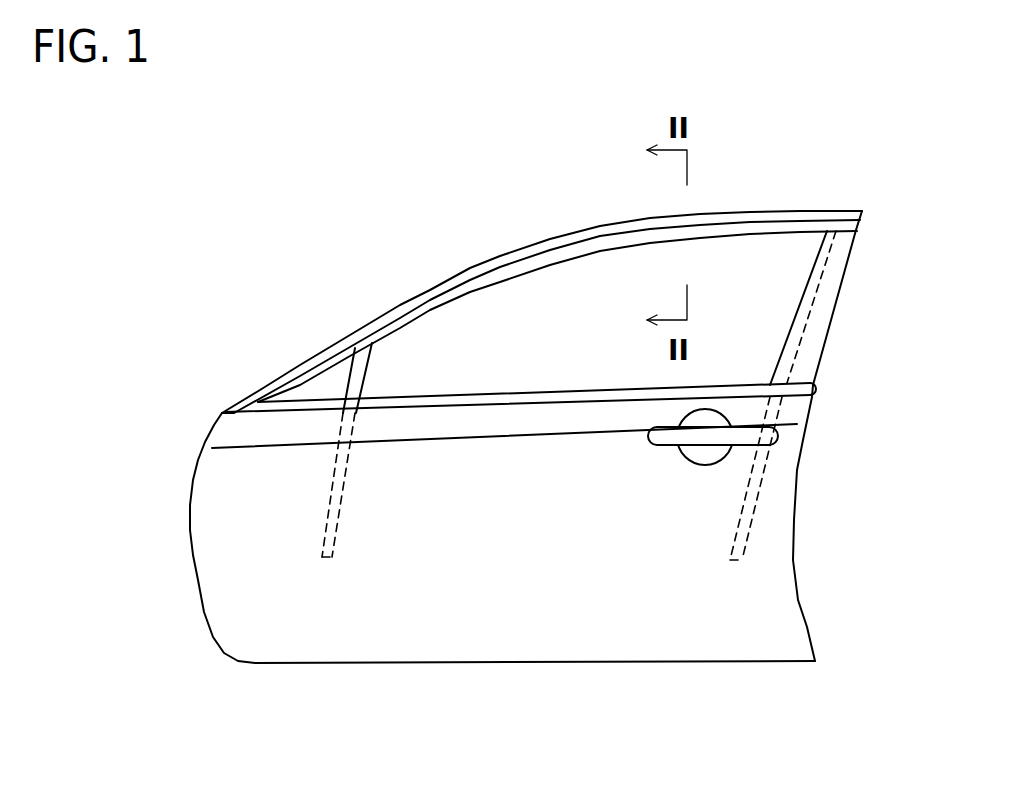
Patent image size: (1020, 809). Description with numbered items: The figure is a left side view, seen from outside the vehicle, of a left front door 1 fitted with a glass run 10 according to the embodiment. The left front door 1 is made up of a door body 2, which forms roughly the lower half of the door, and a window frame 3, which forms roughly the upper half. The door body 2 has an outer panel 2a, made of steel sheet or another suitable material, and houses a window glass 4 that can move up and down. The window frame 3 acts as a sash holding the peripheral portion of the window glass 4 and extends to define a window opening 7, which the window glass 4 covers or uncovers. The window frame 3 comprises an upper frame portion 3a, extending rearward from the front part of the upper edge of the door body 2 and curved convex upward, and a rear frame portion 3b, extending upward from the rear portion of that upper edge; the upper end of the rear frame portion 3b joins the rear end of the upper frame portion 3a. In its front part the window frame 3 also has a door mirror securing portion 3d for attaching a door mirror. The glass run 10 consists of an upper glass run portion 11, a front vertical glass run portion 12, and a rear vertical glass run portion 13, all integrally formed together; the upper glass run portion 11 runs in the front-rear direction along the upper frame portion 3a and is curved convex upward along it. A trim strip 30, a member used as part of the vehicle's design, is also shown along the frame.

The left front door 1 is at (192, 473).
The door body 2 is at (482, 662).
The outer panel 2a is at (547, 638).
The window frame 3 is at (843, 290).
The upper frame portion 3a is at (392, 327).
The rear frame portion 3b is at (817, 320).
The door mirror securing portion 3d is at (327, 380).
The window glass 4 is at (760, 337).
The window opening 7 is at (814, 243).
The glass run 10 is at (753, 210).
The upper glass run portion 11 is at (518, 248).
The front vertical glass run portion 12 is at (320, 537).
The rear vertical glass run portion 13 is at (750, 518).
The trim strip 30 is at (810, 229).